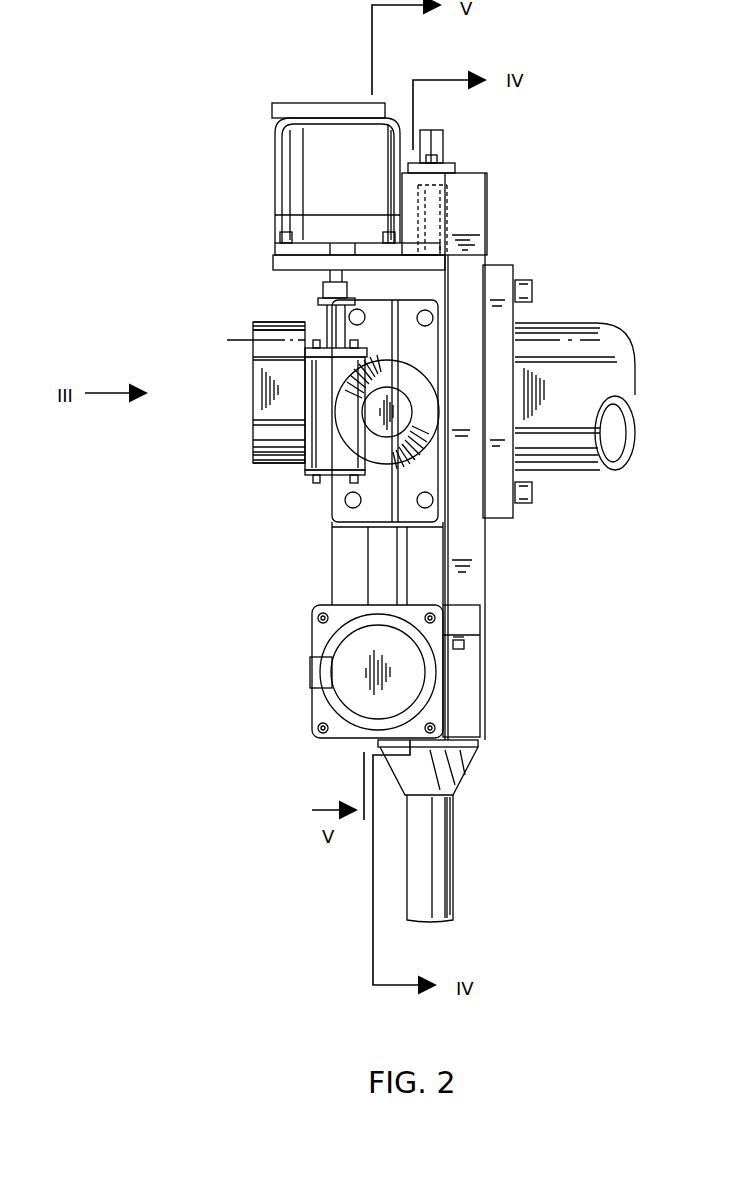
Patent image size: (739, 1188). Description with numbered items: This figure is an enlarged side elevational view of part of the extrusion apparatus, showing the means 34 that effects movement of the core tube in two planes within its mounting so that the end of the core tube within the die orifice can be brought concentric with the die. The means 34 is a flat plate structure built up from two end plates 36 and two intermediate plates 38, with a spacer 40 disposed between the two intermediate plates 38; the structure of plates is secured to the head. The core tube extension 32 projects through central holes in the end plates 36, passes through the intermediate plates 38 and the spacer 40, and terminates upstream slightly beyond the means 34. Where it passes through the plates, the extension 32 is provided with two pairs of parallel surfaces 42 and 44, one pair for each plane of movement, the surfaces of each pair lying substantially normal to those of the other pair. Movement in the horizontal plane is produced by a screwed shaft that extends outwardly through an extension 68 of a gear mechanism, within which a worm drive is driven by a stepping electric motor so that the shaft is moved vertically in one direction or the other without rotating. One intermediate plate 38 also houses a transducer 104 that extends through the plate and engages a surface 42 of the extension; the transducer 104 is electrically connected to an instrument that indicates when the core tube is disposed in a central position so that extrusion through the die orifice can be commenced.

The core tube extension 32 is at (273, 340).
The means to effect movement of the core tube 34 is at (497, 193).
The end plate 36 is at (345, 573).
The intermediate plate 38 is at (380, 540).
The spacer 40 is at (407, 592).
The pair of parallel surfaces 42 is at (270, 322).
The pair of parallel surfaces 44 is at (267, 395).
The extension of gear mechanism 68 is at (441, 848).
The transducer 104 is at (445, 138).